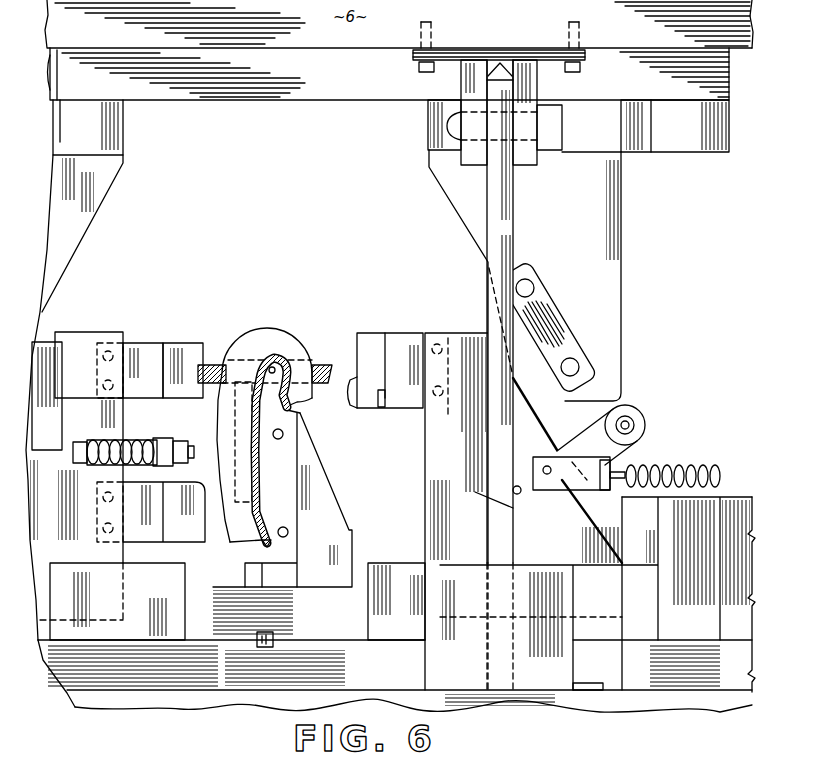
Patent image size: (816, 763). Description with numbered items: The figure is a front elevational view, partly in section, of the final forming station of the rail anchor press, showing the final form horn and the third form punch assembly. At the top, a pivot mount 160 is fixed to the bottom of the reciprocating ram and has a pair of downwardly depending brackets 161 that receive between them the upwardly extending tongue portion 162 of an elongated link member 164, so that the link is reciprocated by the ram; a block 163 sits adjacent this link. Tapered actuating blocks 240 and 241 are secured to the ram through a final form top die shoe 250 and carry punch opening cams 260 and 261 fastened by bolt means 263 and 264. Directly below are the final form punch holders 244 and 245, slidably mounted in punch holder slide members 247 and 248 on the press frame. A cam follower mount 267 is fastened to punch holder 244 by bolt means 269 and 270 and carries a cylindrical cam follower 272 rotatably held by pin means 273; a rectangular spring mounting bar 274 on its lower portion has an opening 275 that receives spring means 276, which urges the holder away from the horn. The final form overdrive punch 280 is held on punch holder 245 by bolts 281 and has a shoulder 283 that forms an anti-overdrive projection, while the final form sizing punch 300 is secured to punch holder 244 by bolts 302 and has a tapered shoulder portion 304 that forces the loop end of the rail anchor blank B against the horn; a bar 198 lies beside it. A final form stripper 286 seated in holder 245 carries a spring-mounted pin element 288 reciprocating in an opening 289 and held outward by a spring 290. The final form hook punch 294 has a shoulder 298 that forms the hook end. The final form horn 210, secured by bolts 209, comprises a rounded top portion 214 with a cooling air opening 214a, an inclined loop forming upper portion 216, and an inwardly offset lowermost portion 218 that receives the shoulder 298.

The pivot mount 160 is at (548, 52).
The brackets 161 is at (537, 92).
The tongue portion 162 is at (492, 58).
The bearing block 163 is at (552, 125).
The link member 164 is at (514, 210).
The bar 198 is at (332, 363).
The bolts 209 is at (278, 440).
The final form horn 210 is at (306, 460).
The rounded top portion 214 is at (281, 365).
The opening 214a is at (276, 362).
The inclined loop forming upper portion 216 is at (292, 410).
The inwardly offset lowermost portion 218 is at (268, 525).
The tapered actuating block 240 is at (614, 238).
The tapered actuating block 241 is at (103, 188).
The final form punch holder 244 is at (458, 343).
The final form punch holder 245 is at (69, 333).
The punch holder slide member 247 is at (387, 623).
The punch holder slide member 248 is at (162, 630).
The final form top die shoe 250 is at (721, 78).
The punch opening cam 260 is at (564, 330).
The punch opening cam 261 is at (43, 280).
The bolt means 263 is at (578, 357).
The bolt means 264 is at (532, 281).
The cam follower mount 267 is at (574, 440).
The bolt means 269 is at (520, 494).
The bolt means 270 is at (533, 507).
The cylindrical cam follower 272 is at (646, 441).
The pin means 273 is at (627, 423).
The spring mounting bar 274 is at (610, 493).
The opening 275 is at (597, 467).
The spring means 276 is at (697, 463).
The final form overdrive punch 280 is at (181, 336).
The bolts 281 is at (105, 340).
The shoulder 283 is at (215, 363).
The final form stripper 286 is at (133, 440).
The pin element 288 is at (174, 442).
The opening 289 is at (176, 464).
The spring 290 is at (98, 435).
The final form hook punch 294 is at (182, 533).
The shoulder 298 is at (207, 523).
The final form sizing punch 300 is at (407, 345).
The bolts 302 is at (440, 408).
The tapered shoulder portion 304 is at (363, 398).
The rail anchor blank B is at (270, 330).